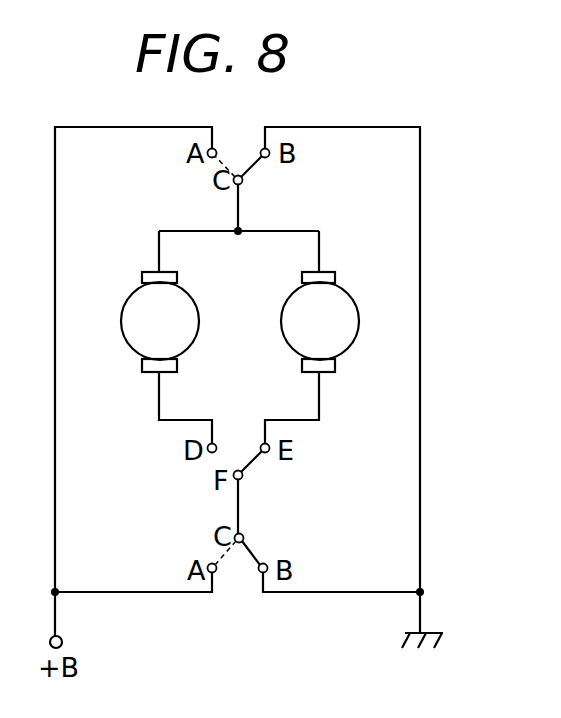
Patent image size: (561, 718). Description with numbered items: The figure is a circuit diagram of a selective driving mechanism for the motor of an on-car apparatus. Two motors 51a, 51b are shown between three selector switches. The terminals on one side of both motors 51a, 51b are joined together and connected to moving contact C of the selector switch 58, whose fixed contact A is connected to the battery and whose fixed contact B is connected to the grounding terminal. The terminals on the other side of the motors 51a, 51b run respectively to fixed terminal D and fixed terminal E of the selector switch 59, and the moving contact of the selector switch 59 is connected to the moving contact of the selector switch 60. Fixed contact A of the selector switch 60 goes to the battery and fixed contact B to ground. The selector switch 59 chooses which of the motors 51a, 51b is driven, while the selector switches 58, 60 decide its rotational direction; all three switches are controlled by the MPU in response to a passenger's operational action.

The selector switch 58 is at (253, 164).
The selector switch 59 is at (252, 463).
The selector switch 60 is at (250, 553).
The motor 51a is at (121, 327).
The motor 51b is at (358, 327).